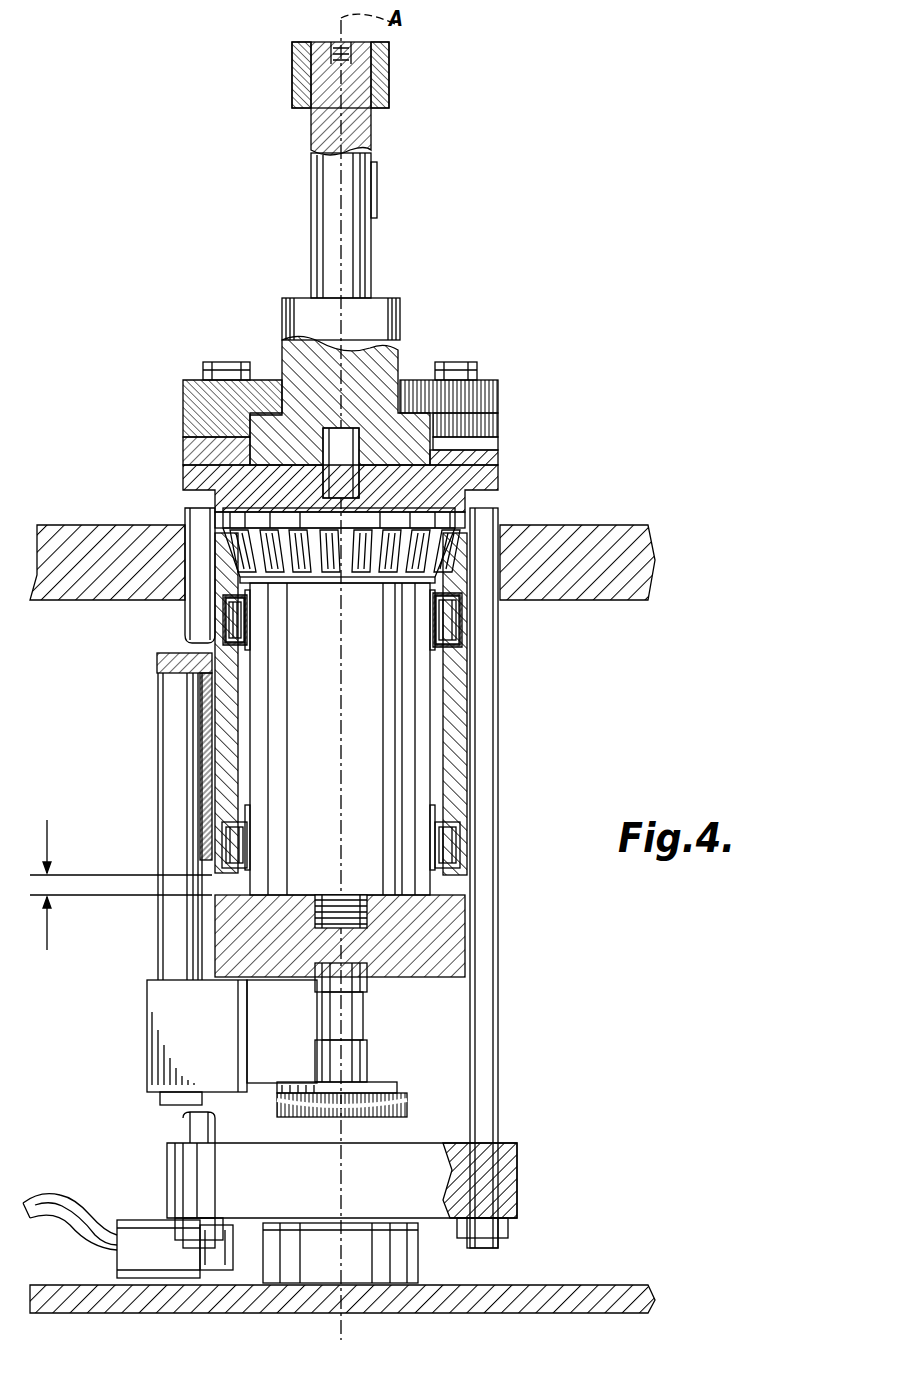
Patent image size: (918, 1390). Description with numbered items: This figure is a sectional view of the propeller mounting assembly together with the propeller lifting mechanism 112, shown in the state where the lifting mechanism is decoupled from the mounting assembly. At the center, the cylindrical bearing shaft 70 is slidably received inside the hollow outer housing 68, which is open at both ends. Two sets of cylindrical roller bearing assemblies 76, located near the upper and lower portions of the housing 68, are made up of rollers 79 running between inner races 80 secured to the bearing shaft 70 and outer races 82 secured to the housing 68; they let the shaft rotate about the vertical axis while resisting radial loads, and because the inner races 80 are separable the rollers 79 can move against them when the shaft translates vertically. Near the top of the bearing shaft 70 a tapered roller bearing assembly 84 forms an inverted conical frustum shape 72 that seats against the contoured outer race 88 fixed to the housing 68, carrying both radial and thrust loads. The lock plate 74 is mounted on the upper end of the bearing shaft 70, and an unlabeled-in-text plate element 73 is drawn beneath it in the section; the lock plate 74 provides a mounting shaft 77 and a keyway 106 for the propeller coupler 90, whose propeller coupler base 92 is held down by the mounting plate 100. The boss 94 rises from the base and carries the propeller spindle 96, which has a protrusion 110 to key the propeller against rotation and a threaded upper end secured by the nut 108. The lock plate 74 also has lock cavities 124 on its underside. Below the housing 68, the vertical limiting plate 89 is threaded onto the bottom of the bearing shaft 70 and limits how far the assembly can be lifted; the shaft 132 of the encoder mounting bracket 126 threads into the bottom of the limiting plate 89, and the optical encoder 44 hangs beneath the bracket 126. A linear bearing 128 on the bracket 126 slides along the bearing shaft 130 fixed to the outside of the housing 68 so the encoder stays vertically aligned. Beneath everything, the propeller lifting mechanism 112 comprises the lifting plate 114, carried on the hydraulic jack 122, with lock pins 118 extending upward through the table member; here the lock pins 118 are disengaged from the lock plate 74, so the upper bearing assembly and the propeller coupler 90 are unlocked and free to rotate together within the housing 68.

The nut 108 is at (398, 76).
The propeller spindle 96 is at (322, 226).
The protrusion 110 is at (378, 188).
The boss 94 is at (398, 320).
The mounting shaft 77 is at (322, 428).
The mounting plate 100 is at (500, 392).
The propeller coupler base 92 is at (498, 430).
The keyway 106 is at (470, 458).
The lock plate 74 is at (183, 450).
The mounting plate 73 is at (320, 498).
The lock cavities 124 is at (214, 507).
The tapered roller bearing assembly 84 is at (505, 543).
The outer race 88 is at (225, 540).
The lock pins 118 is at (185, 612).
The outer housing 68 is at (468, 766).
The bearing shaft 70 is at (420, 710).
The inverted conical frustum shape 72 is at (320, 585).
The cylindrical roller bearing assemblies 76 is at (222, 616).
The rollers 79 is at (236, 620).
The outer races 82 is at (225, 640).
The inner races 80 is at (235, 640).
The bearing shaft 130 is at (158, 780).
The vertical limiting plate 89 is at (460, 936).
The shaft 132 is at (362, 1014).
The linear bearing 128 is at (150, 1038).
The encoder mounting bracket 126 is at (250, 1093).
The optical encoder 44 is at (410, 1108).
The propeller lifting mechanism 112 is at (560, 1130).
The lifting plate 114 is at (183, 1182).
The hydraulic jack 122 is at (418, 1262).
The propeller coupler 90 is at (517, 206).